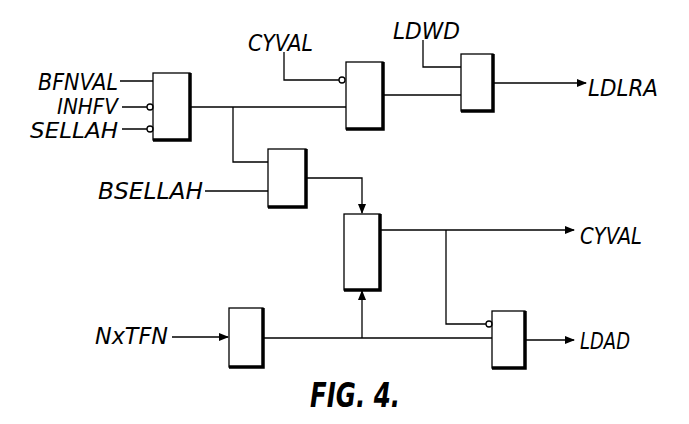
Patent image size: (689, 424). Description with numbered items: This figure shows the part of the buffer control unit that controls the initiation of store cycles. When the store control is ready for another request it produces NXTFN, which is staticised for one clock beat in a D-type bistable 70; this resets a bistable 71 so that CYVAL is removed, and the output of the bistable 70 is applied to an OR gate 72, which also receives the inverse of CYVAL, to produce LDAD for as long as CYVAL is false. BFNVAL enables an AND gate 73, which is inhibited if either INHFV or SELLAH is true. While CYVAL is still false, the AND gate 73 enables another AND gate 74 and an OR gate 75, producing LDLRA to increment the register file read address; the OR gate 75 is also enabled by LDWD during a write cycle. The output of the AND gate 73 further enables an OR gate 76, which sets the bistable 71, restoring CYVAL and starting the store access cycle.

The D-type bistable 70 is at (243, 312).
The bistable 71 is at (382, 220).
The OR gate 72 is at (513, 312).
The AND gate 73 is at (175, 74).
The AND gate 74 is at (382, 118).
The OR gate 75 is at (487, 56).
The OR gate 76 is at (282, 153).